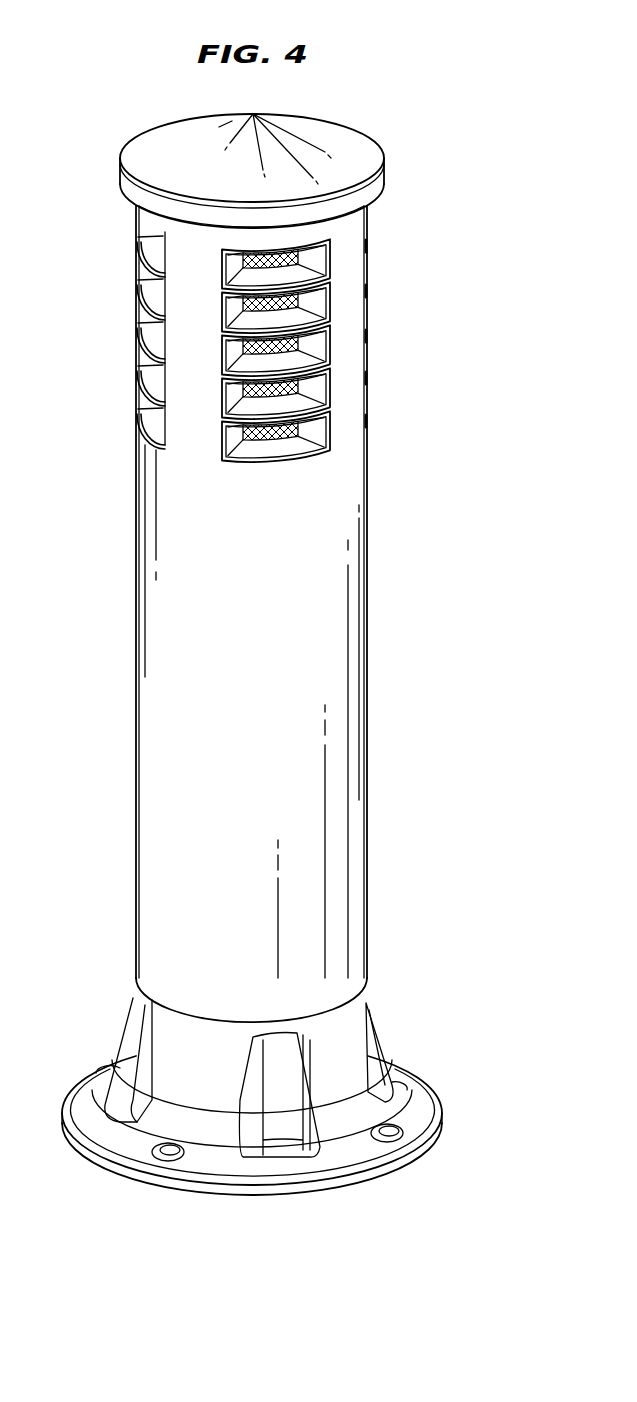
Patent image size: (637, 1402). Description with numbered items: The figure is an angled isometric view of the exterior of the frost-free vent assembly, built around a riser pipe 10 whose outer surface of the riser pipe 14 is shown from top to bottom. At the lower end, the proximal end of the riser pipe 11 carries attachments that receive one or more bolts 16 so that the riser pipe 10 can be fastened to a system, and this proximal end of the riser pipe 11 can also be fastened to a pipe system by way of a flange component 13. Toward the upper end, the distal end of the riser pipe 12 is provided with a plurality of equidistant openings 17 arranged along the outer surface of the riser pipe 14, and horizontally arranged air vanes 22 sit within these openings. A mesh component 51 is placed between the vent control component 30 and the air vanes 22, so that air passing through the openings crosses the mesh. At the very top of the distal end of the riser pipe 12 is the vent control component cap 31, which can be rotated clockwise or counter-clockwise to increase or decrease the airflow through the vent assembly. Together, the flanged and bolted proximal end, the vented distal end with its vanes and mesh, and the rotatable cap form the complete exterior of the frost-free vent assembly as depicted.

The riser pipe 10 is at (297, 960).
The proximal end of the riser pipe 11 is at (183, 838).
The distal end of the riser pipe 12 is at (345, 340).
The flange component 13 is at (340, 1170).
The outer surface of the riser pipe 14 is at (289, 672).
The attachments for bolts 16 is at (150, 1147).
The equidistant openings 17 is at (157, 248).
The air vanes 22 is at (137, 292).
The vent control component 30 is at (131, 193).
The vent control component cap 31 is at (342, 183).
The mesh component 51 is at (300, 255).